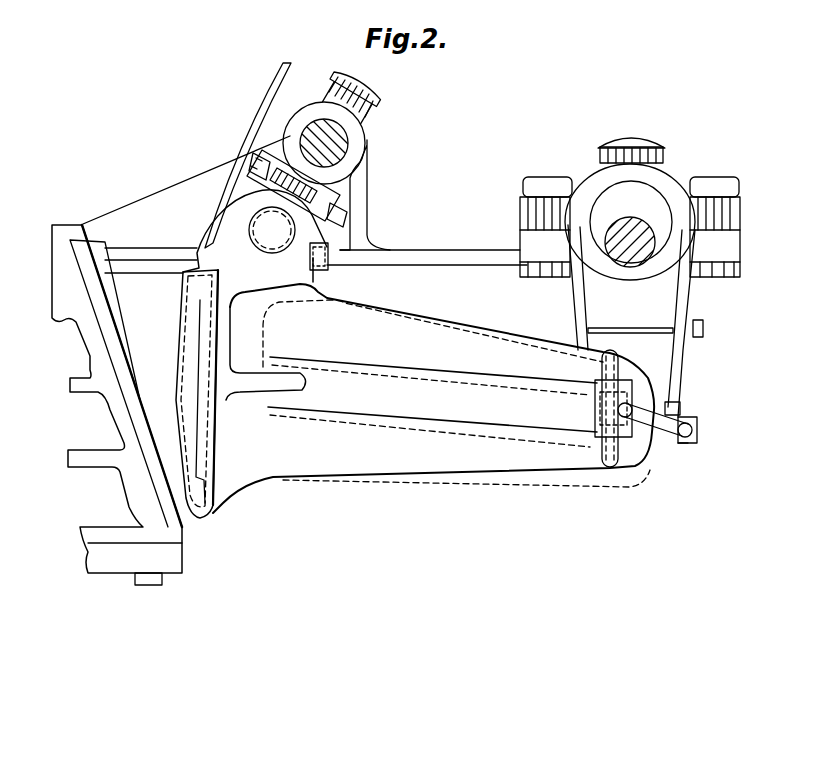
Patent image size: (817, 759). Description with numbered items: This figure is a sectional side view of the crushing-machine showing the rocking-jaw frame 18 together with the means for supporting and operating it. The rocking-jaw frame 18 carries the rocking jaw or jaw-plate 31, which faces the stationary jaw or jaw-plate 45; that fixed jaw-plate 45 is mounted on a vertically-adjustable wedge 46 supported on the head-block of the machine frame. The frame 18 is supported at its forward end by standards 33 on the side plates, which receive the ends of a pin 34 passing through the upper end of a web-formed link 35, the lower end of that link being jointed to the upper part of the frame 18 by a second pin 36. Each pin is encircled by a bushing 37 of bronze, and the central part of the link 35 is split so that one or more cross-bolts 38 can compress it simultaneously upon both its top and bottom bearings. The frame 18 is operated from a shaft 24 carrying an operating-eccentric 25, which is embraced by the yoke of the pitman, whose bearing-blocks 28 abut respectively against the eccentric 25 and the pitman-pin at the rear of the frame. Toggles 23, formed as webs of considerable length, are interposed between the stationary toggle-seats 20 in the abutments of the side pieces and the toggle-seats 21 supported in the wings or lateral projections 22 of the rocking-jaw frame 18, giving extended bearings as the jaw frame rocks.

The rocking-jaw frame 18 is at (433, 398).
The toggle-seat 20 is at (698, 424).
The toggle-seat 21 is at (637, 405).
The wings 22 is at (603, 452).
The toggle 23 is at (680, 445).
The shaft 24 is at (645, 242).
The operating-eccentric 25 is at (632, 235).
The bearing-block 28 is at (635, 321).
The rocking jaw 31 is at (190, 332).
The standard 33 is at (385, 210).
The pin 34 is at (332, 146).
The web-formed link 35 is at (277, 170).
The second pin 36 is at (270, 238).
The bushing 37 is at (343, 165).
The cross-bolt 38 is at (277, 187).
The stationary jaw-plate 45 is at (103, 310).
The vertically-adjustable wedge 46 is at (58, 279).